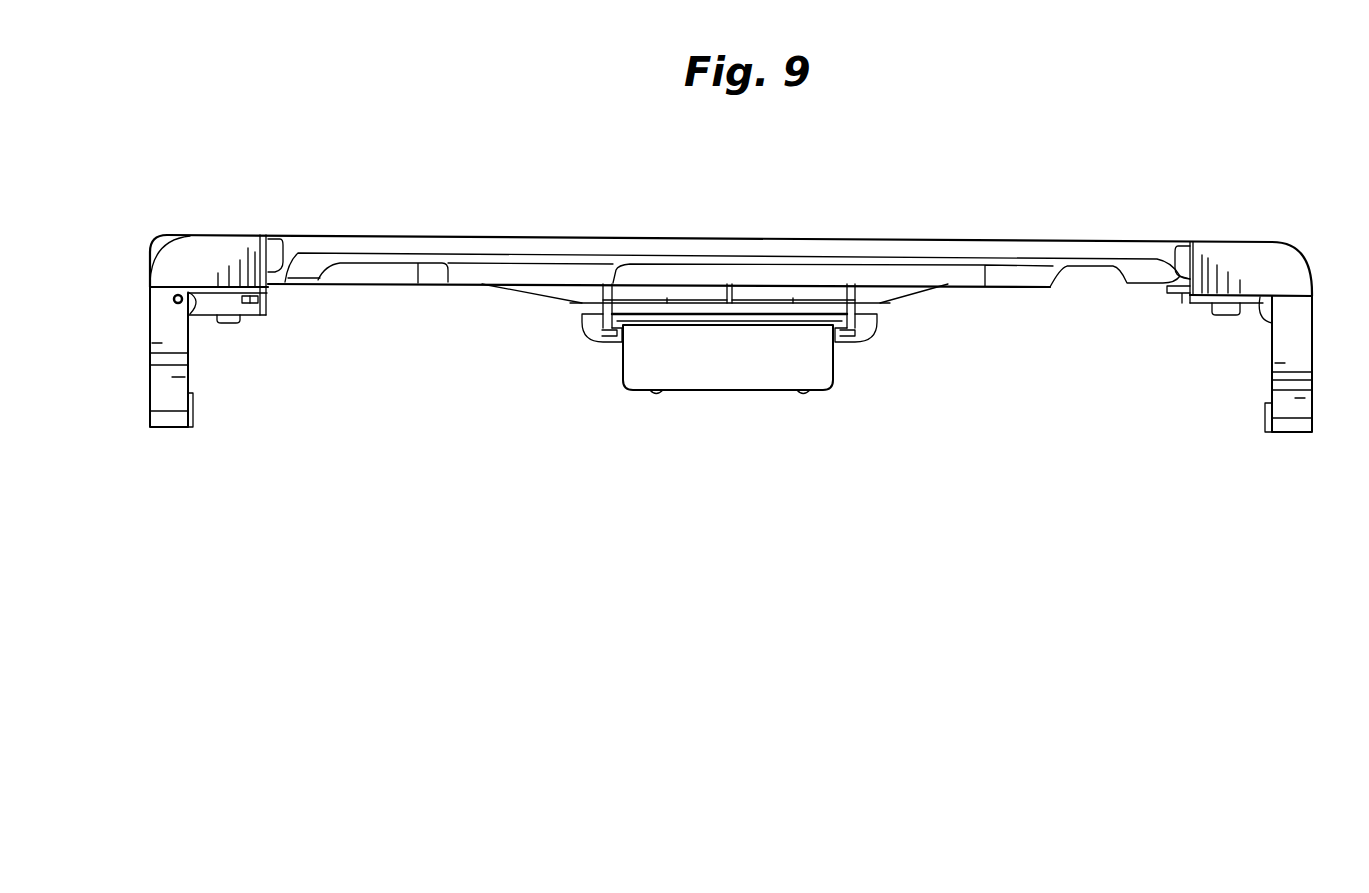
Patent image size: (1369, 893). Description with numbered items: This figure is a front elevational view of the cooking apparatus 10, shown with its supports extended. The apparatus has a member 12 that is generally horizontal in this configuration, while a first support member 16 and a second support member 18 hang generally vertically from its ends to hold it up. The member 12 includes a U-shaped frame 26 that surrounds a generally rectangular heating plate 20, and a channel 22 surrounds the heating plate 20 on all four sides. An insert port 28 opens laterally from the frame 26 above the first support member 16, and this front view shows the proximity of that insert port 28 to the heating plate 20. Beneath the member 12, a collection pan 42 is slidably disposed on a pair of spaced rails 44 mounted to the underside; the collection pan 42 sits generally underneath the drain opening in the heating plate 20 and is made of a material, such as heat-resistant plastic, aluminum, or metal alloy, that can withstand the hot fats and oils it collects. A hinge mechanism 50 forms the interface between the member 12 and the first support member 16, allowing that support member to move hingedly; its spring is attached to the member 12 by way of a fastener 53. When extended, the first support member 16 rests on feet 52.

The cooking apparatus 10 is at (455, 180).
The member 12 is at (716, 218).
The first support member 16 is at (150, 372).
The second support member 18 is at (1310, 352).
The heating plate 20 is at (840, 255).
The channel 22 is at (1032, 272).
The U-shaped frame 26 is at (223, 235).
The insert port 28 is at (257, 323).
The collection pan 42 is at (717, 390).
The rails 44 is at (582, 318).
The hinge mechanism 50 is at (158, 298).
The feet 52 is at (172, 427).
The fastener 53 is at (260, 302).